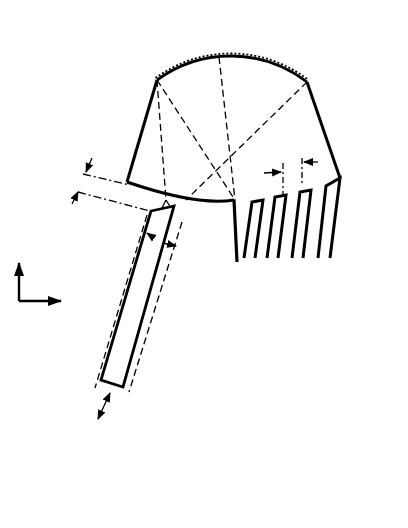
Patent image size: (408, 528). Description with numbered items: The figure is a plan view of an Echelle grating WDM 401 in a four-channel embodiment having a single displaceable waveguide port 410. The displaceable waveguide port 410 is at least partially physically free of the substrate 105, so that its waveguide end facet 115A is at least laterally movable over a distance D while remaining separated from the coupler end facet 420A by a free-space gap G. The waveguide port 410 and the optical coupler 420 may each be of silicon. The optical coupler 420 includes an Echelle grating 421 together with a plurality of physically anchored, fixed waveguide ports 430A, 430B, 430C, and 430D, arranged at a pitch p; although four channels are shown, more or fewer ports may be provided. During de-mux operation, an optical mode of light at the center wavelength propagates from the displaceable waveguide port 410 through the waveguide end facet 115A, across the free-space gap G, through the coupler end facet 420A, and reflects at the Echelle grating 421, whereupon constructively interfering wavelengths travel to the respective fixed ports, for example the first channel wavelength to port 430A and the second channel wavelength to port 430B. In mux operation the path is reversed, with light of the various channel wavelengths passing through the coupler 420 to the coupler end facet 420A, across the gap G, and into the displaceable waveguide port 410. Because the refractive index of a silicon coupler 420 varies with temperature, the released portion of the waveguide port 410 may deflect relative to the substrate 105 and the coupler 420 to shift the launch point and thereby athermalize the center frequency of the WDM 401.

The Echelle grating WDM 401 is at (127, 89).
The optical coupler 420 is at (303, 149).
The Echelle grating 421 is at (290, 71).
The coupler end facet 420A is at (190, 209).
The fixed waveguide port 430A is at (234, 249).
The fixed waveguide port 430B is at (283, 243).
The fixed waveguide port 430C is at (306, 233).
The fixed waveguide port 430D is at (335, 225).
The displaceable waveguide port 410 is at (112, 362).
The waveguide end facet 115A is at (154, 202).
The substrate 105 is at (239, 334).